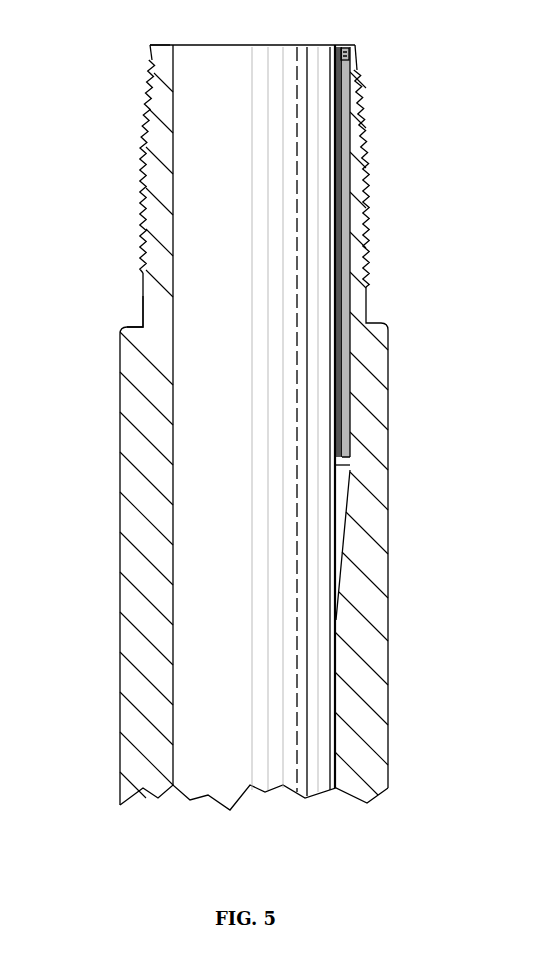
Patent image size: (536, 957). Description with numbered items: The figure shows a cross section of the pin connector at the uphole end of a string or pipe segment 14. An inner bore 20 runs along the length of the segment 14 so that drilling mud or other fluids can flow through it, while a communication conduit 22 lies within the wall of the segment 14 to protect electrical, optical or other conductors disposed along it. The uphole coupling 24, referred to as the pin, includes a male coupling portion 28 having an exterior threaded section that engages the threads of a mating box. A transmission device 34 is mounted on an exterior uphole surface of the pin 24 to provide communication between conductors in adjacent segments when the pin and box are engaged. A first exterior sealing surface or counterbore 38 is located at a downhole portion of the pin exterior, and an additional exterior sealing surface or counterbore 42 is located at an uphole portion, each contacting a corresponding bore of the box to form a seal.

The string or pipe segment 14 is at (133, 608).
The inner bore 20 is at (323, 725).
The communication conduit 22 is at (344, 380).
The uphole coupling 24 is at (363, 306).
The male coupling portion 28 is at (143, 213).
The transmission device 34 is at (345, 50).
The first exterior sealing surface or counterbore 38 is at (143, 303).
The additional exterior sealing surface or counterbore 42 is at (153, 68).